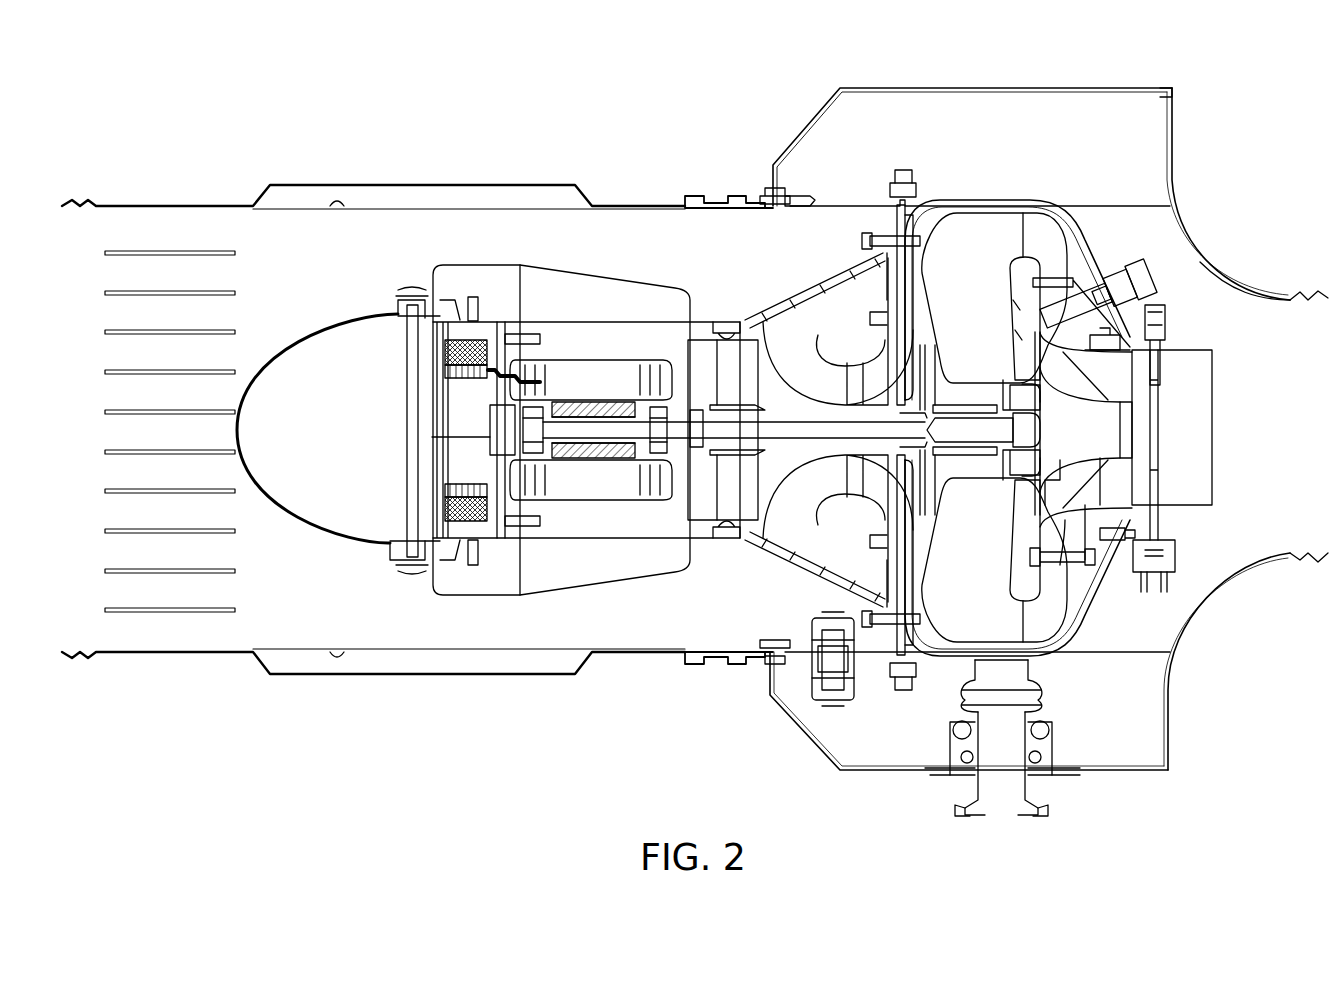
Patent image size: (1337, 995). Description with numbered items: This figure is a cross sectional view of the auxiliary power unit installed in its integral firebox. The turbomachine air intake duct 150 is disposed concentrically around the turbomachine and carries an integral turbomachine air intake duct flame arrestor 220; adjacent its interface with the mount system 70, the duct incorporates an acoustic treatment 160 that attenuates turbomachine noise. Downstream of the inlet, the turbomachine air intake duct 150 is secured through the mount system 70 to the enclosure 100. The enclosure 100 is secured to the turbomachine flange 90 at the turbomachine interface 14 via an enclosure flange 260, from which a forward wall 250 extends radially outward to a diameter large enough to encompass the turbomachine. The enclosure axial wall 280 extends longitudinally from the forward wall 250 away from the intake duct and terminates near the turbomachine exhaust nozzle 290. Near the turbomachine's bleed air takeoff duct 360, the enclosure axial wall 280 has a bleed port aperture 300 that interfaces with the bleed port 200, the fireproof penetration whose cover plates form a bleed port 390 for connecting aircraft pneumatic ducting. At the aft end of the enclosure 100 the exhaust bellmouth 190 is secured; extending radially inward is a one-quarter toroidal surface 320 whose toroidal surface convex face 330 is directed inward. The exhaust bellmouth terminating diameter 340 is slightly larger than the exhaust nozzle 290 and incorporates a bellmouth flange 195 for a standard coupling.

The turbomachine interface 14 is at (793, 198).
The mount system 70 is at (700, 197).
The turbomachine flange 90 is at (780, 650).
The enclosure 100 is at (985, 88).
The turbomachine air intake duct 150 is at (202, 653).
The acoustic treatment 160 is at (380, 185).
The exhaust bellmouth 190 is at (1232, 282).
The bellmouth flange 195 is at (1318, 562).
The bleed port 200 is at (1042, 802).
The turbomachine air intake duct flame arrestor 220 is at (118, 615).
The forward wall 250 is at (807, 735).
The enclosure flange 260 is at (770, 176).
The enclosure axial wall 280 is at (1086, 88).
The turbomachine exhaust nozzle 290 is at (1215, 440).
The bleed port aperture 300 is at (1047, 760).
The one-quarter toroidal surface 320 is at (1176, 648).
The toroidal surface convex face 330 is at (1170, 166).
The exhaust bellmouth terminating diameter 340 is at (1300, 300).
The bleed air takeoff duct 360 is at (965, 683).
The bleed port 390 is at (960, 788).